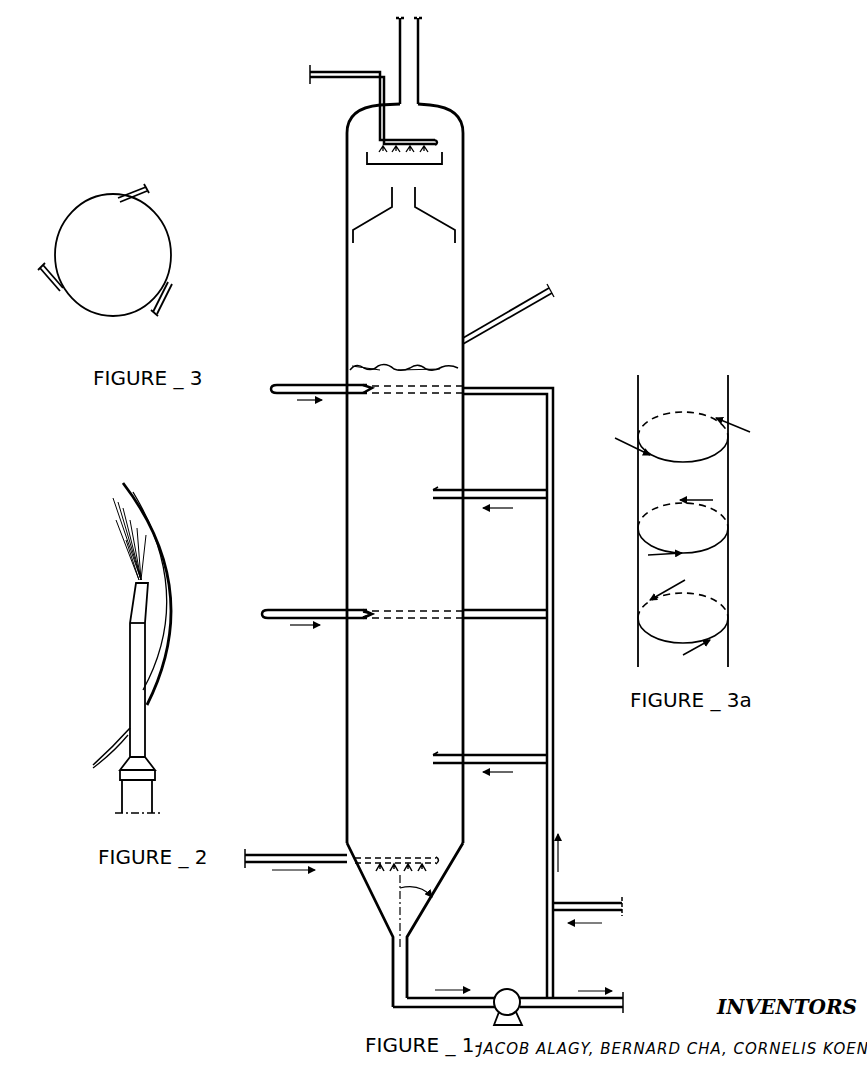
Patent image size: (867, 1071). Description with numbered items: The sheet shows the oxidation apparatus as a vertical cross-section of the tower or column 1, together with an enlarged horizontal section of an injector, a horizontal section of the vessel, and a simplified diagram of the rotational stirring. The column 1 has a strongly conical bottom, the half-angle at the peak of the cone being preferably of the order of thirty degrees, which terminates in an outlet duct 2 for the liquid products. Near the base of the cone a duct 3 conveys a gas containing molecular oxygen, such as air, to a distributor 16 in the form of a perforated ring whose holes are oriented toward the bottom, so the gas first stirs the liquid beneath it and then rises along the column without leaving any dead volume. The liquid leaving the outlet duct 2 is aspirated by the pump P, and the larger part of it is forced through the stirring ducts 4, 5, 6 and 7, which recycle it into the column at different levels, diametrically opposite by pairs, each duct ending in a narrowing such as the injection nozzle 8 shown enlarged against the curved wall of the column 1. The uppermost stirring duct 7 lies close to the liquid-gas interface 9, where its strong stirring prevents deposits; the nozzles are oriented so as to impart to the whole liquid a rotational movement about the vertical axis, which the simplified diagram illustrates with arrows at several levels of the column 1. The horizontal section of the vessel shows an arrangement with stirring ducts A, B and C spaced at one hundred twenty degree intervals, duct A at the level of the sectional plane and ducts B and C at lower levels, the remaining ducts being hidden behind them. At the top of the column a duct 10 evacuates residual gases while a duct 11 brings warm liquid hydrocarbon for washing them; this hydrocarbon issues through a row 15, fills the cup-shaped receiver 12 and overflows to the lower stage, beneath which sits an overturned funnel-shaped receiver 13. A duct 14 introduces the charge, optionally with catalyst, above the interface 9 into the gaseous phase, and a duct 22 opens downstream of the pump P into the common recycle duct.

In FIG. 1, the vertical tower or column 1 is at (347, 500).
In FIG. 2, the vertical tower or column 1 is at (176, 598).
In FIG. 3, the vertical tower or column 1 is at (170, 240).
In FIG. 3A, the vertical tower or column 1 is at (638, 493).
In FIG. 1, the outlet duct 2 is at (393, 960).
In FIG. 1, the gas duct 3 is at (294, 854).
In FIG. 1, the stirring duct 4 is at (508, 754).
In FIG. 1, the stirring duct 5 is at (298, 609).
In FIG. 1, the stirring duct 6 is at (509, 489).
In FIG. 1, the stirring duct 7 is at (300, 388).
In FIG. 1, the injection nozzle 8 is at (367, 617).
In FIG. 2, the injection nozzle 8 is at (138, 720).
In FIG. 1, the liquid-gas interface 9 is at (370, 368).
In FIG. 1, the residual gas duct 10 is at (415, 45).
In FIG. 1, the washing liquid duct 11 is at (332, 72).
In FIG. 1, the cup-shaped receiver 12 is at (444, 155).
In FIG. 1, the funnel-shaped receiver 13 is at (447, 226).
In FIG. 1, the charge duct 14 is at (514, 310).
In FIG. 1, the row 15 is at (405, 140).
In FIG. 1, the distributor 16 is at (391, 856).
In FIG. 1, the duct 22 is at (594, 902).
In FIG. 1, the pump P is at (558, 992).
In FIG. 3, the stirring duct A is at (123, 197).
In FIG. 3, the stirring duct B is at (51, 288).
In FIG. 3, the stirring duct C is at (160, 306).